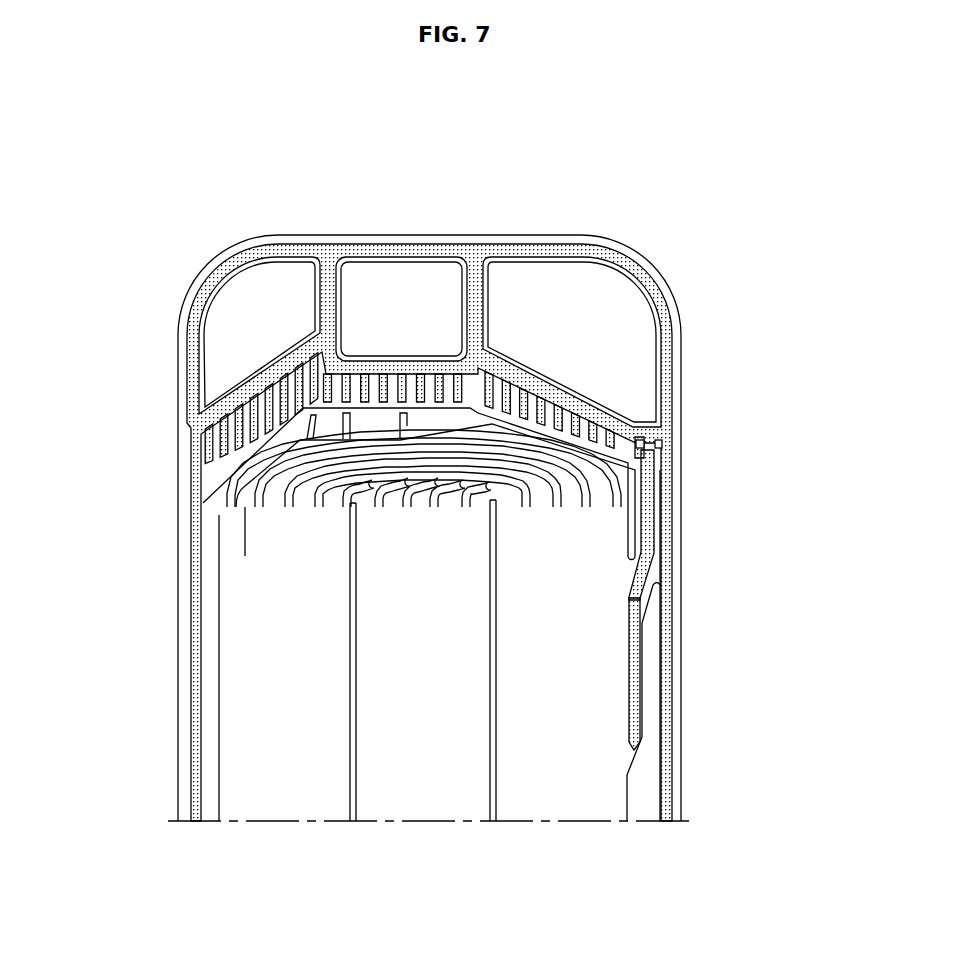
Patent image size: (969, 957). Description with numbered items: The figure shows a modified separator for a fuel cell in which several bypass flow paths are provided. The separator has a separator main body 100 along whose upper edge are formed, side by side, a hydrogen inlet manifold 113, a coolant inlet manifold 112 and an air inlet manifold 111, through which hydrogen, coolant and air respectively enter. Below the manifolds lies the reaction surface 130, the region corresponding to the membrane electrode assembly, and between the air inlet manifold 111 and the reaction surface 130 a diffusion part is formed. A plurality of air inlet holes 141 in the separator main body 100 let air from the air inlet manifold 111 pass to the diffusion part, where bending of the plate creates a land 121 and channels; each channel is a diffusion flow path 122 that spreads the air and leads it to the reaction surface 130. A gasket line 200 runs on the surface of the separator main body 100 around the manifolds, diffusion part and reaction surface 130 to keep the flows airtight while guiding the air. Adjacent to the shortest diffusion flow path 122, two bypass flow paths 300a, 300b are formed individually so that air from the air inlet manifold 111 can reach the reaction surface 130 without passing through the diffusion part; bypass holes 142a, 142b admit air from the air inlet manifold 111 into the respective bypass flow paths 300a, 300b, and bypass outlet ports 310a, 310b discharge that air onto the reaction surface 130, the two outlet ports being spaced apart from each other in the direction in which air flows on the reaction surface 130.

The separator main body 100 is at (500, 236).
The air inlet manifold 111 is at (592, 296).
The coolant inlet manifold 112 is at (420, 285).
The hydrogen inlet manifold 113 is at (262, 290).
The land 121 is at (230, 500).
The diffusion flow path 122 is at (245, 510).
The reaction surface 130 is at (255, 750).
The air inlet holes 141 is at (625, 423).
The bypass hole 142a is at (644, 456).
The bypass hole 142b is at (661, 441).
The gasket line 200 is at (668, 283).
The bypass flow path 300a is at (640, 505).
The bypass flow path 300b is at (658, 540).
The bypass outlet port 310a is at (628, 573).
The bypass outlet port 310b is at (637, 750).